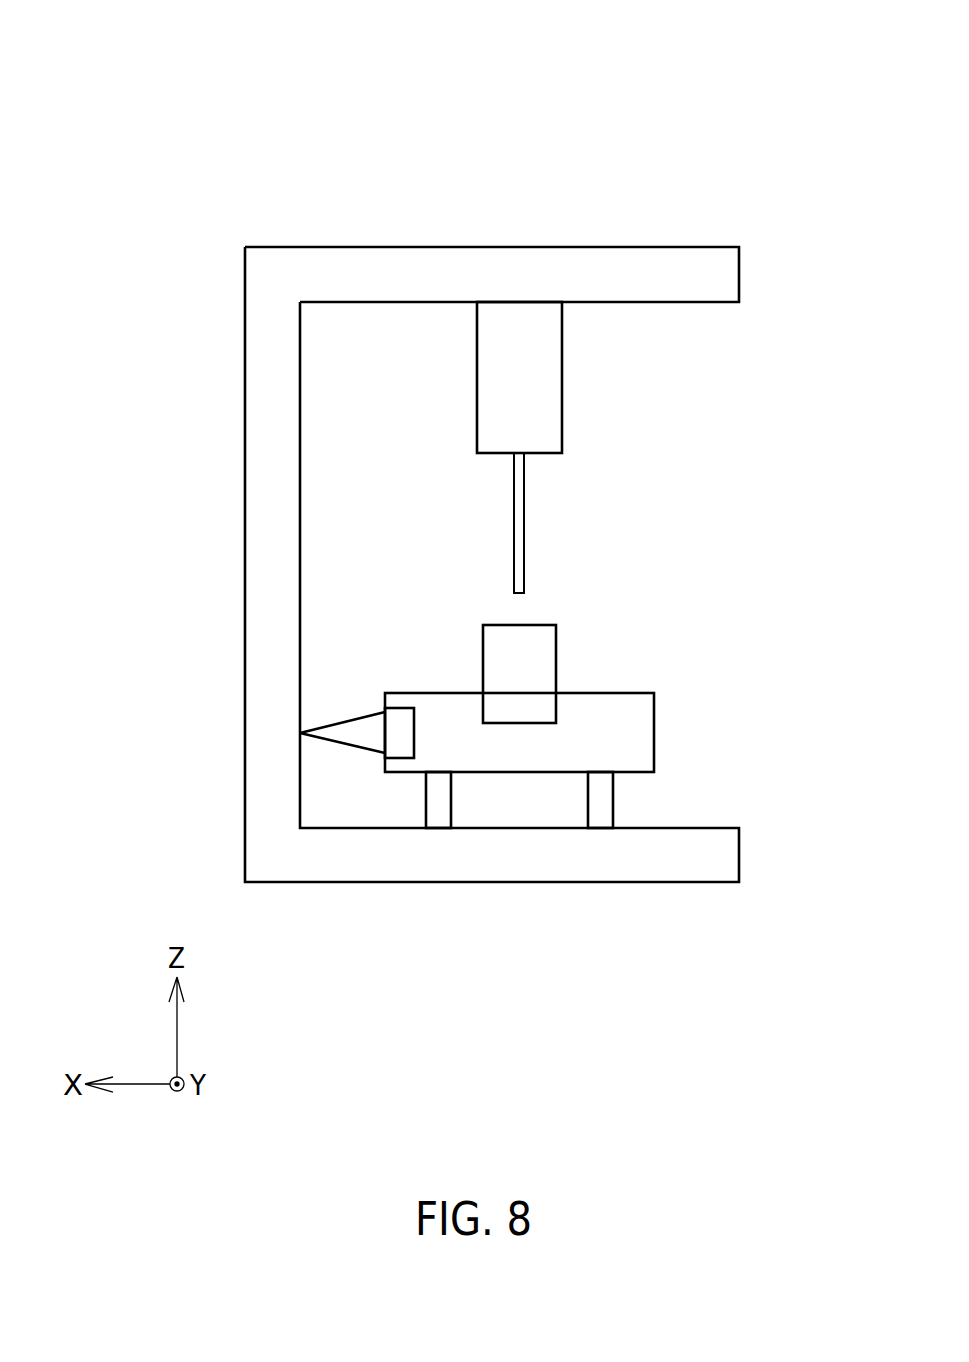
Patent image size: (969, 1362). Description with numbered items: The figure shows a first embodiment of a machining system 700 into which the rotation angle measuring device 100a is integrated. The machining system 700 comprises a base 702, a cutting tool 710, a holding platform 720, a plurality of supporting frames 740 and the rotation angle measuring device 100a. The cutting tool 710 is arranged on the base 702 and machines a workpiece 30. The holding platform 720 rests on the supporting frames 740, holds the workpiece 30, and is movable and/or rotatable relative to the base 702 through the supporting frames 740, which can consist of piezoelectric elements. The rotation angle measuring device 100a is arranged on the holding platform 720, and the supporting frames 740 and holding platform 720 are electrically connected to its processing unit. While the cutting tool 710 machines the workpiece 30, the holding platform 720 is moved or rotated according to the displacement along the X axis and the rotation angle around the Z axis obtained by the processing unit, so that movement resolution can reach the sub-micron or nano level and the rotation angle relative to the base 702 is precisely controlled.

The machining system 700 is at (705, 103).
The base 702 is at (706, 270).
The cutting tool 710 is at (525, 493).
The workpiece 30 is at (547, 652).
The holding platform 720 is at (632, 726).
The rotation angle measuring device 100a is at (398, 719).
The supporting frame 740 is at (443, 799).